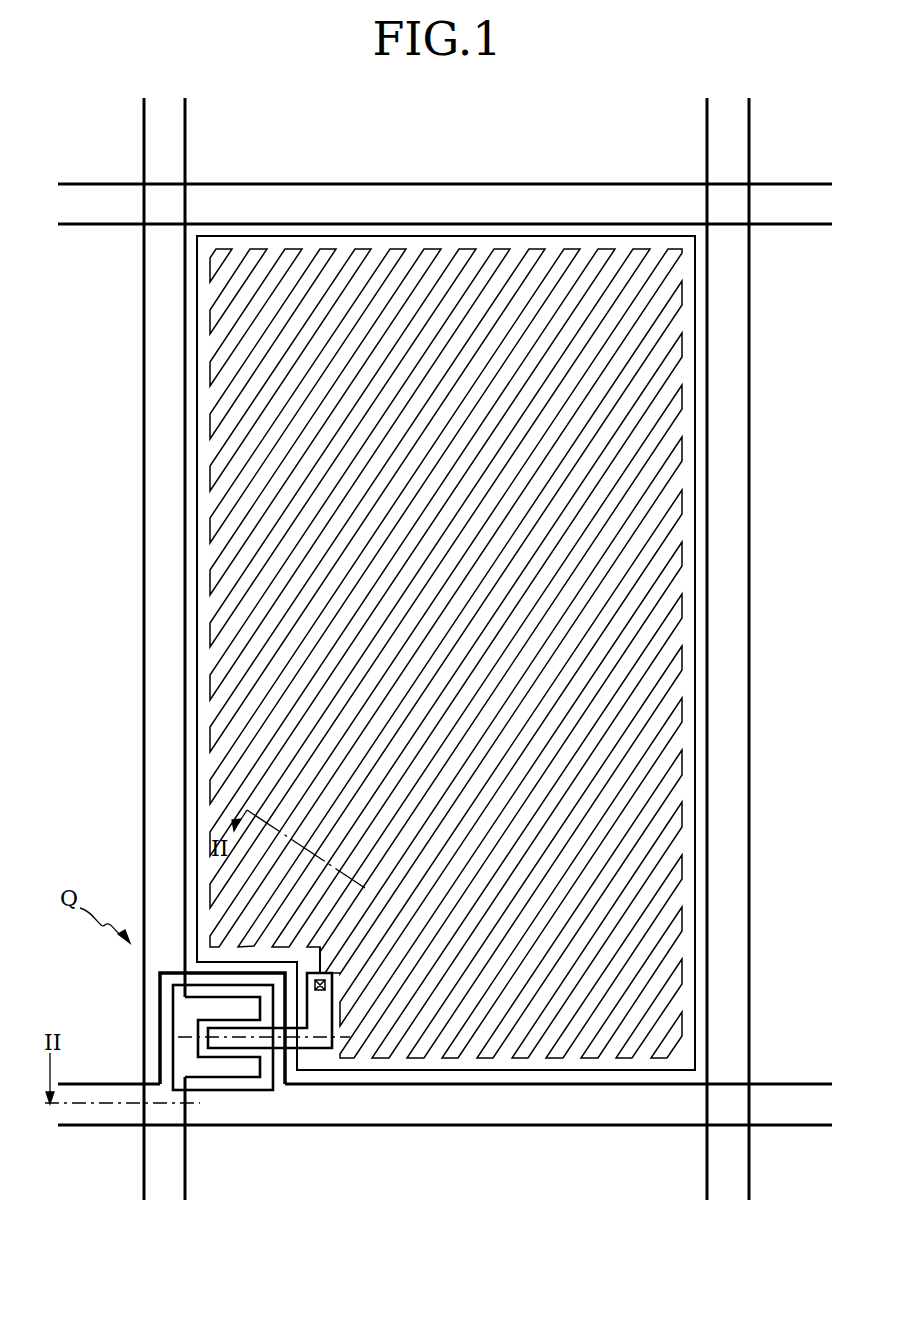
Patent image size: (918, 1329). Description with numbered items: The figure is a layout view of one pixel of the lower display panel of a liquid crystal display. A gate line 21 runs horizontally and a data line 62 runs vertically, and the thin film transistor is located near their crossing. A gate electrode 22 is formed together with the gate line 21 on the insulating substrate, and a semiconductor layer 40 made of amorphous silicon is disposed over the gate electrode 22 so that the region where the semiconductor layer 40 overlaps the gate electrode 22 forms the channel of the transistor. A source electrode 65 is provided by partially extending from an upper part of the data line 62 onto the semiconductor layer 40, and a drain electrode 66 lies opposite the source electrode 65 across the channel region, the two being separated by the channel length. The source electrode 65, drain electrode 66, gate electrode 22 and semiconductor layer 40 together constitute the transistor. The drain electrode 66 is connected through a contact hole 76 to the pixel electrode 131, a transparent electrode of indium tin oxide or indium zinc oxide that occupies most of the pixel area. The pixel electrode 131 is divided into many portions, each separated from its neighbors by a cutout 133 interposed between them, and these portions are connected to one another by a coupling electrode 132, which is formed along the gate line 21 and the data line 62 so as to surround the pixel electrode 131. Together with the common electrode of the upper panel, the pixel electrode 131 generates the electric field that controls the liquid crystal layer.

The gate line 21 is at (485, 1127).
The gate electrode 22 is at (160, 975).
The semiconductor layer 40 is at (262, 1092).
The data line 62 is at (143, 1147).
The source electrode 65 is at (212, 1080).
The drain electrode 66 is at (322, 1050).
The contact hole 76 is at (326, 985).
The pixel electrode 131 is at (657, 786).
The coupling electrode 132 is at (697, 680).
The cutout 133 is at (669, 838).